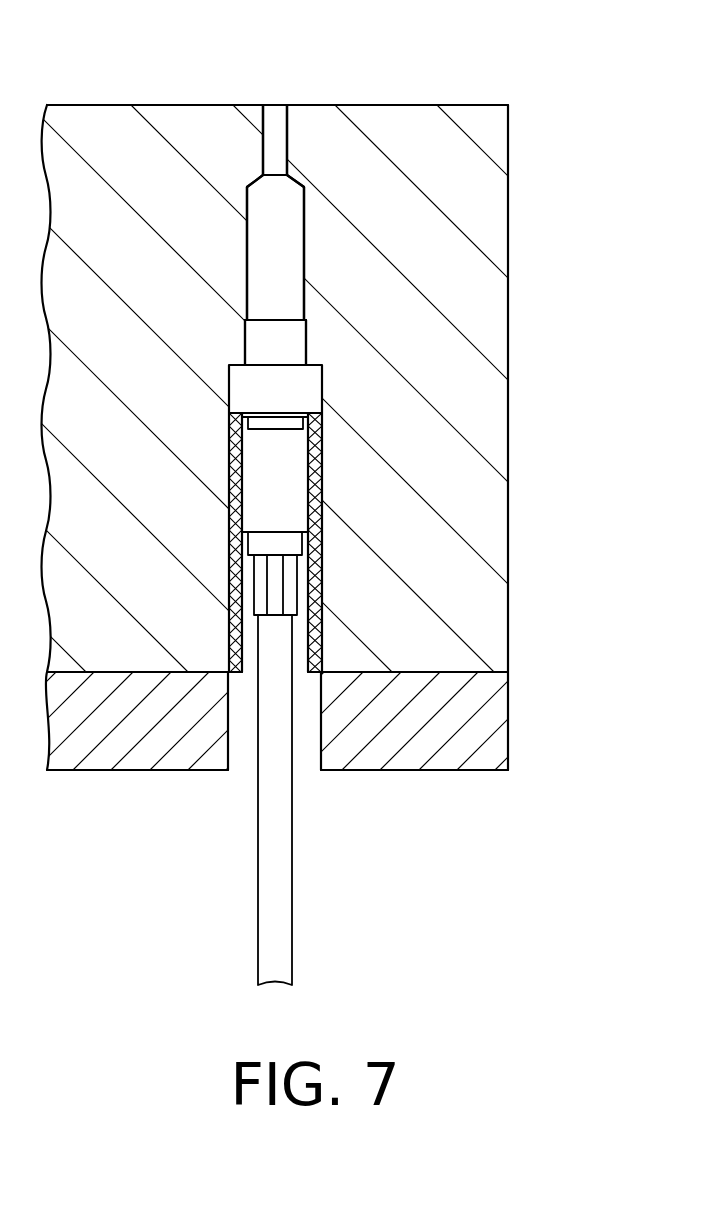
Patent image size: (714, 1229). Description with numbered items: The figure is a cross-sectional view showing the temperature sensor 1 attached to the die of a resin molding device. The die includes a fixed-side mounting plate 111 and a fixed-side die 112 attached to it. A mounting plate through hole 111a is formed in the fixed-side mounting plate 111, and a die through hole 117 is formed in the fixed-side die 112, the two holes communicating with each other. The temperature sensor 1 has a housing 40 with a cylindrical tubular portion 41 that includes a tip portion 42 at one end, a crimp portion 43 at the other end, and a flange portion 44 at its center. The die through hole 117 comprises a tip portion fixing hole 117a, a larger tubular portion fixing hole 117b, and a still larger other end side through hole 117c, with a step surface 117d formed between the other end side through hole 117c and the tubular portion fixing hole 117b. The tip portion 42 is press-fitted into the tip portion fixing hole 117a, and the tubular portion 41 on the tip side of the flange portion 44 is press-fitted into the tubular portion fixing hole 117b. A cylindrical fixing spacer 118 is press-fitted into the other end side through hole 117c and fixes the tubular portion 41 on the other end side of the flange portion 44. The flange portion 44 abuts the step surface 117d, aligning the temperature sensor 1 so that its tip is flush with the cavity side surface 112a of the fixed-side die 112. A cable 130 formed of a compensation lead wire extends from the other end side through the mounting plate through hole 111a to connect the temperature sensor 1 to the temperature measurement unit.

The temperature sensor 1 is at (330, 240).
The housing 40 is at (323, 337).
The tubular portion 41 is at (287, 305).
The tip portion 42 is at (278, 150).
The crimp portion 43 is at (282, 542).
The flange portion 44 is at (293, 399).
The fixed-side mounting plate 111 is at (487, 712).
The mounting plate through hole 111a is at (229, 718).
The fixed-side die 112 is at (487, 200).
The cavity side surface 112a is at (167, 105).
The die through hole 117 is at (235, 258).
The tip portion fixing hole 117a is at (282, 125).
The tubular portion fixing hole 117b is at (300, 187).
The other end side through hole 117c is at (316, 588).
The step surface 117d is at (313, 369).
The fixing spacer 118 is at (322, 480).
The cable 130 is at (275, 856).